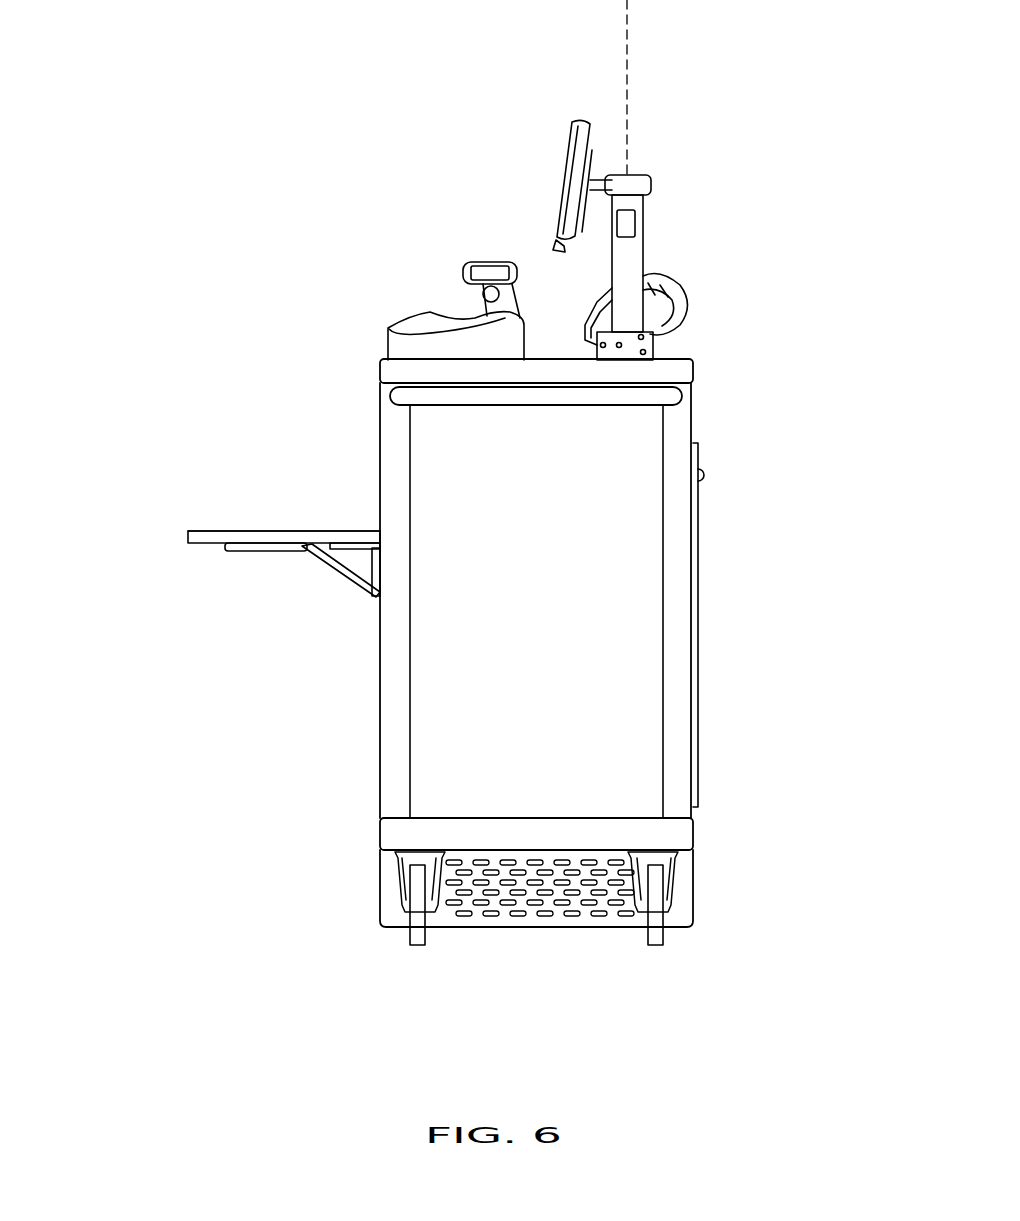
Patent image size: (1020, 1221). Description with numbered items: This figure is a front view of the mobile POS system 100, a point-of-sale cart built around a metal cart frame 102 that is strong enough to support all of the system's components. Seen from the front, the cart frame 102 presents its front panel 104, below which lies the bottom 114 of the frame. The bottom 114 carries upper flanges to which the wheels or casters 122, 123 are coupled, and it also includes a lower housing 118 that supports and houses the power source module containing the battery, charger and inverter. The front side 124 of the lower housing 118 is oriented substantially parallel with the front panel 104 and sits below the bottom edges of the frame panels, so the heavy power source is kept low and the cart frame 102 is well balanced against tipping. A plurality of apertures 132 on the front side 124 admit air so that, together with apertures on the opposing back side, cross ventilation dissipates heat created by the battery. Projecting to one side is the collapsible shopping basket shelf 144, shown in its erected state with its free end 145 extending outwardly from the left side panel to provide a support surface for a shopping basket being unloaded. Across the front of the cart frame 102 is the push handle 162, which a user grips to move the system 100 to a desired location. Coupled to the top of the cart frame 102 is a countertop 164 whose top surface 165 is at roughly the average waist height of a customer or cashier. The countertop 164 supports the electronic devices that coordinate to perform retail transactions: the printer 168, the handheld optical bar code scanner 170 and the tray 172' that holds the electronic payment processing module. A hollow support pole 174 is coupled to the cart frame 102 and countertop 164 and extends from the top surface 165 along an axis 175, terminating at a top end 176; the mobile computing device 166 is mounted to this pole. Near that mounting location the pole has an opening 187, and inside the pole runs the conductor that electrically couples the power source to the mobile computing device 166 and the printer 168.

The mobile POS system 100 is at (140, 228).
The cart frame 102 is at (705, 392).
The front panel 104 is at (645, 530).
The bottom 114 is at (545, 945).
The lower housing 118 is at (500, 945).
The caster 122 is at (415, 946).
The caster 123 is at (655, 945).
The front side 124 is at (577, 922).
The apertures 132 is at (475, 885).
The shopping basket shelf 144 is at (178, 552).
The free end 145 is at (190, 535).
The push handle 162 is at (512, 397).
The countertop 164 is at (690, 375).
The top surface 165 is at (553, 352).
The mobile computing device 166 is at (566, 152).
The printer 168 is at (672, 282).
The handheld optical bar code scanner 170 is at (484, 262).
The tray 172' is at (396, 287).
The support pole 174 is at (630, 262).
The axis 175 is at (627, 63).
The top end 176 is at (634, 175).
The opening 187 is at (637, 222).